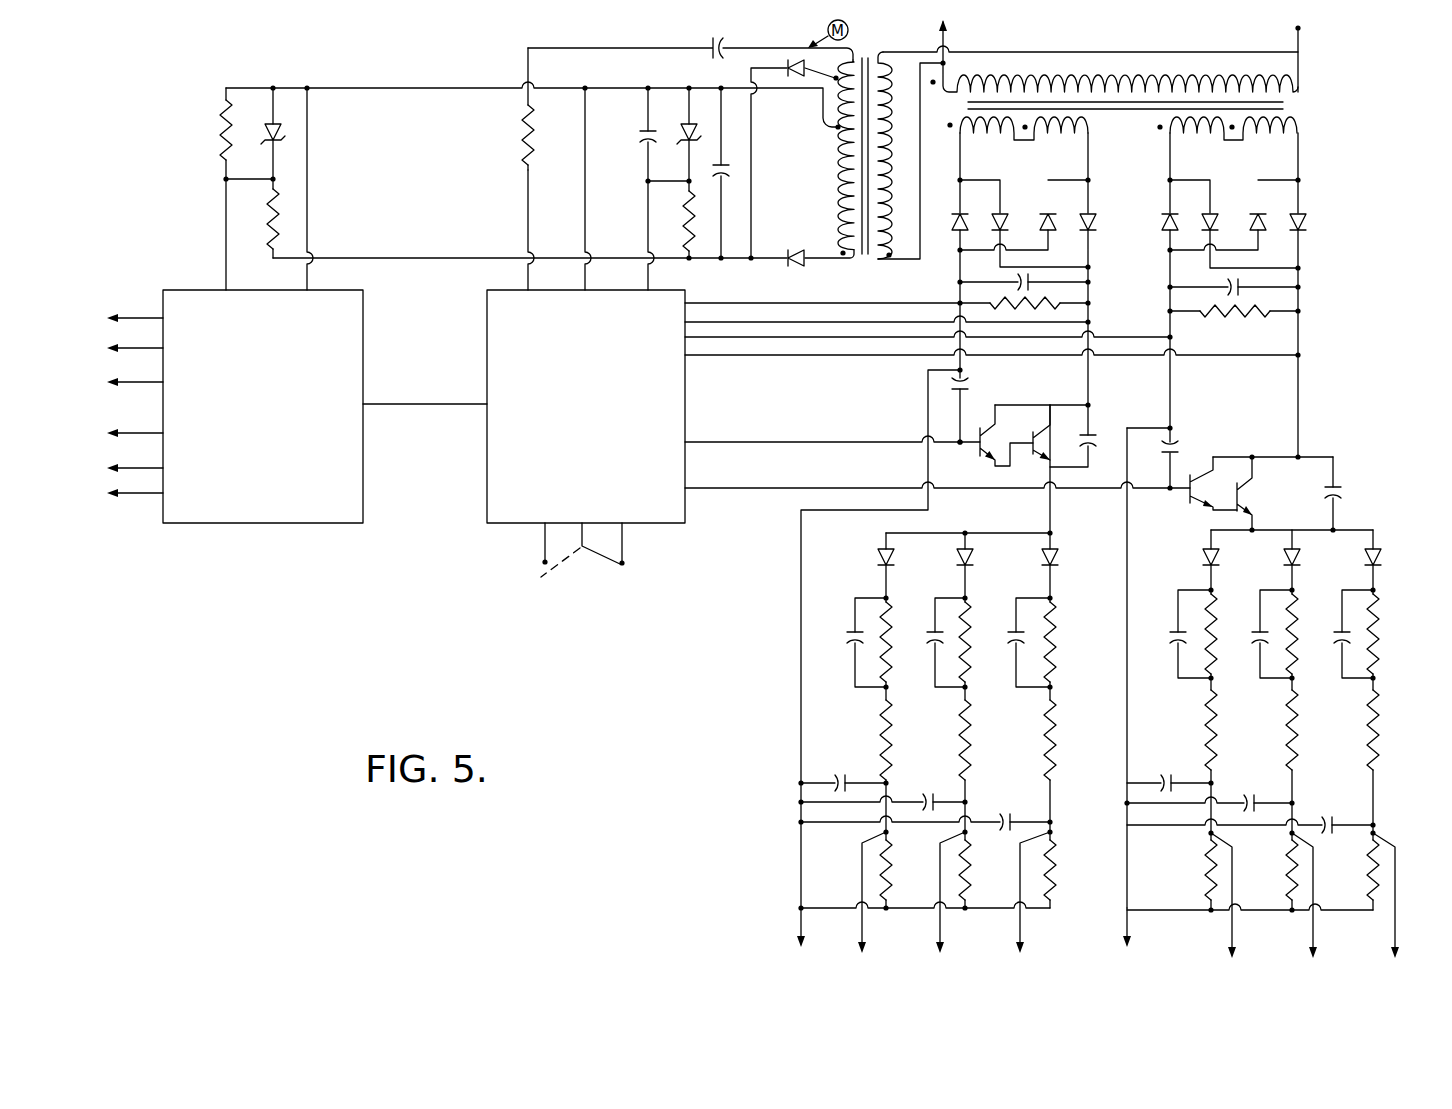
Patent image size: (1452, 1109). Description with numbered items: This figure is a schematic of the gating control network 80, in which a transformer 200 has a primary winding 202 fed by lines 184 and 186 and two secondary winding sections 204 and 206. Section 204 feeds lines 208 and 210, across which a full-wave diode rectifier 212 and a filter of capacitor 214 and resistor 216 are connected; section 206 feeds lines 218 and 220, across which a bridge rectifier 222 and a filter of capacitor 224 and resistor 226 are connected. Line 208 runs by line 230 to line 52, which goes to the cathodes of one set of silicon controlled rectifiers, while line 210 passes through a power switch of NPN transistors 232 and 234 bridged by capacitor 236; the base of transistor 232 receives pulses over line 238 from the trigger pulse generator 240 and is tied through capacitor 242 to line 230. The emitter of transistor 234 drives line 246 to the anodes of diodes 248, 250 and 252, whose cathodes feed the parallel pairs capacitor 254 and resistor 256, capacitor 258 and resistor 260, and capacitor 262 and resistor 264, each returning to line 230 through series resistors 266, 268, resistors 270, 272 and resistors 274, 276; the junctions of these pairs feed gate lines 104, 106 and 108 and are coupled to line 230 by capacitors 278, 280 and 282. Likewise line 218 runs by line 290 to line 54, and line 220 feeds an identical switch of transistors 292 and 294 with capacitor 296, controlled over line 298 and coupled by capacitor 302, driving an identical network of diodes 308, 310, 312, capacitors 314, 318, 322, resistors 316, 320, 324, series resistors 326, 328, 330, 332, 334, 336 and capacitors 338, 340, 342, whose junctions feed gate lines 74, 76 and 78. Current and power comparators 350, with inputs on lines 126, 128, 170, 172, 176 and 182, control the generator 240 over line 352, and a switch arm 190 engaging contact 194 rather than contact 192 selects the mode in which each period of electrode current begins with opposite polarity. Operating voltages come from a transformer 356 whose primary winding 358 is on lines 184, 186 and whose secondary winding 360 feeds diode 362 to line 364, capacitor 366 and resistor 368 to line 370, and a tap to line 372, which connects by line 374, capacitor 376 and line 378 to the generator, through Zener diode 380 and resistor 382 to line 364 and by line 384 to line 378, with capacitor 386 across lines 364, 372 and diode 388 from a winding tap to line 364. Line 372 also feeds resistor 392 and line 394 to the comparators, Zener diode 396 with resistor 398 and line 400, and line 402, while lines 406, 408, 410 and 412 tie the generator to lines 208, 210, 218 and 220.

The line 52 is at (798, 922).
The line 54 is at (1124, 931).
The line 74 is at (1228, 936).
The line 76 is at (1310, 936).
The line 78 is at (1392, 936).
The gating control network 80 is at (1338, 222).
The line 104 is at (857, 931).
The line 106 is at (936, 931).
The line 108 is at (1016, 931).
The line 126 is at (137, 468).
The line 128 is at (138, 493).
The line 170 is at (140, 433).
The line 172 is at (140, 382).
The line 176 is at (140, 348).
The line 182 is at (145, 318).
The line 184 is at (1296, 30).
The line 186 is at (946, 34).
The switch arm 190 is at (586, 570).
The switch contact 192 is at (540, 560).
The contact 194 is at (628, 562).
The transformer 200 is at (1298, 108).
The primary winding 202 is at (1170, 88).
The secondary winding section 204 is at (1094, 132).
The secondary winding section 206 is at (1300, 118).
The line 208 is at (958, 267).
The line 210 is at (1086, 278).
The full-wave diode rectifier 212 is at (958, 222).
The capacitor 214 is at (1030, 285).
The resistor 216 is at (1060, 306).
The line 218 is at (1168, 264).
The line 220 is at (1300, 273).
The full-wave diode bridge rectifier 222 is at (1167, 222).
The capacitor 224 is at (1240, 289).
The resistor 226 is at (1262, 314).
The line 230 is at (928, 407).
The NPN transistor 232 is at (975, 476).
The NPN transistor 234 is at (1028, 433).
The capacitor 236 is at (1094, 434).
The line 238 is at (828, 442).
The trigger pulse generator 240 is at (487, 488).
The capacitor 242 is at (967, 384).
The line 246 is at (1048, 514).
The diode 248 is at (880, 562).
The diode 250 is at (960, 562).
The diode 252 is at (1045, 562).
The capacitor 254 is at (848, 640).
The resistor 256 is at (880, 657).
The capacitor 258 is at (924, 628).
The resistor 260 is at (970, 662).
The capacitor 262 is at (1020, 633).
The resistor 264 is at (1052, 661).
The resistor 266 is at (882, 745).
The resistor 268 is at (890, 860).
The resistor 270 is at (970, 740).
The resistor 272 is at (972, 860).
The resistor 274 is at (1054, 740).
The resistor 276 is at (1054, 872).
The capacitor 278 is at (830, 780).
The capacitor 280 is at (922, 798).
The capacitor 282 is at (1004, 814).
The line 290 is at (1126, 604).
The NPN transistor 292 is at (1186, 498).
The NPN transistor 294 is at (1254, 482).
The capacitor 296 is at (1339, 490).
The line 298 is at (786, 486).
The capacitor 302 is at (1174, 452).
The diode 308 is at (1207, 562).
The diode 310 is at (1288, 562).
The diode 312 is at (1369, 562).
The capacitor 314 is at (1173, 638).
The resistor 316 is at (1214, 656).
The capacitor 318 is at (1260, 628).
The resistor 320 is at (1294, 656).
The capacitor 322 is at (1342, 628).
The resistor 324 is at (1380, 642).
The resistor 326 is at (1216, 748).
The resistor 328 is at (1204, 880).
The resistor 330 is at (1298, 748).
The resistor 332 is at (1288, 874).
The resistor 334 is at (1378, 740).
The resistor 336 is at (1370, 878).
The capacitor 338 is at (1182, 752).
The capacitor 340 is at (1249, 798).
The capacitor 342 is at (1346, 800).
The current and power comparator circuits 350 is at (268, 525).
The line 352 is at (457, 404).
The transformer 356 is at (872, 261).
The primary winding 358 is at (887, 160).
The secondary winding 360 is at (838, 190).
The diode 362 is at (806, 266).
The line 364 is at (410, 258).
The capacitor 366 is at (718, 40).
The resistor 368 is at (526, 148).
The line 370 is at (526, 236).
The line 372 is at (450, 86).
The line 374 is at (584, 200).
The capacitor 376 is at (646, 140).
The line 378 is at (648, 275).
The Zener diode 380 is at (685, 122).
The resistor 382 is at (689, 245).
The line 384 is at (672, 179).
The capacitor 386 is at (728, 178).
The diode 388 is at (790, 72).
The resistor 392 is at (222, 124).
The line 394 is at (226, 230).
The Zener diode 396 is at (277, 128).
The resistor 398 is at (258, 226).
The line 400 is at (226, 179).
The line 402 is at (308, 165).
The line 406 is at (810, 300).
The line 408 is at (778, 324).
The line 410 is at (776, 340).
The line 412 is at (838, 357).